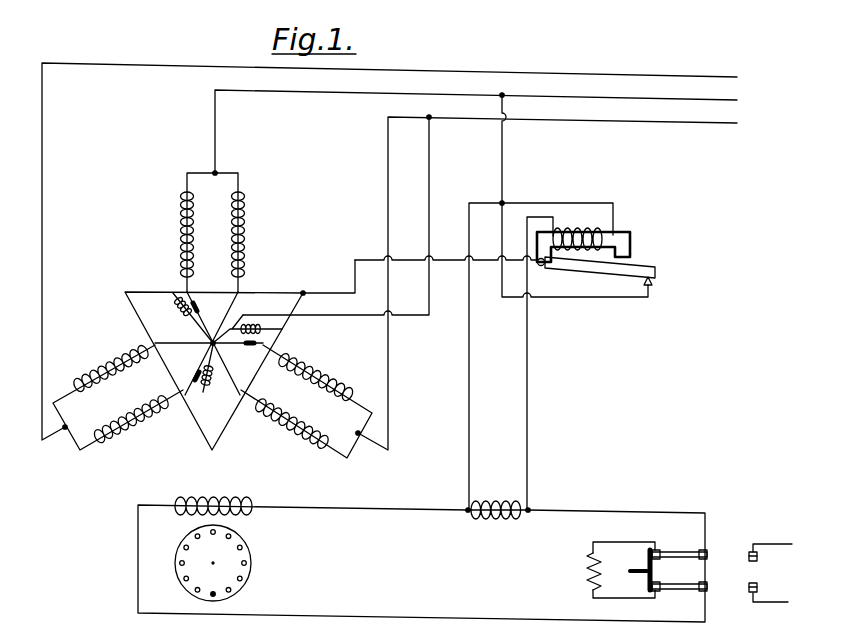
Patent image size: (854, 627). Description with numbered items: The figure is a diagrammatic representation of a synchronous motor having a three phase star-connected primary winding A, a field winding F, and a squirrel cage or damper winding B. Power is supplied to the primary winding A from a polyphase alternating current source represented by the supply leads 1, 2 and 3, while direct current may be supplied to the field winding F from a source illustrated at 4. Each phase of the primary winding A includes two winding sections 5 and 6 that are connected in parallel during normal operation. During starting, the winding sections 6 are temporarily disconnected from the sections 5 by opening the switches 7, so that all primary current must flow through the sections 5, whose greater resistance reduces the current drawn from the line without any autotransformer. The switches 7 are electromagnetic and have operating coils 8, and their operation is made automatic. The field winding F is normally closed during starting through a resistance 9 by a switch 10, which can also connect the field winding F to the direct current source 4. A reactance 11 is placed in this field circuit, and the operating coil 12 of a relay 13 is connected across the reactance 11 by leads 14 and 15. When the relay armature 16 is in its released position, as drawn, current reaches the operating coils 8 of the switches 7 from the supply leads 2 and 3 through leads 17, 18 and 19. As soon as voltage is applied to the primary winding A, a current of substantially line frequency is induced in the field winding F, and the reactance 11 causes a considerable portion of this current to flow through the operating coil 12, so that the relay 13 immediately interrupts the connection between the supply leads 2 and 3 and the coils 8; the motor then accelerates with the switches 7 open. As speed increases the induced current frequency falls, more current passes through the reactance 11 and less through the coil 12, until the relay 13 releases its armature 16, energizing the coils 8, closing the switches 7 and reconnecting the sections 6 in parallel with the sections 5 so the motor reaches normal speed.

The supply lead 1 is at (676, 78).
The supply lead 2 is at (683, 104).
The supply lead 3 is at (727, 118).
The source of direct current 4 is at (766, 526).
The winding section 5 is at (250, 197).
The winding section 6 is at (183, 197).
The switch 7 is at (201, 306).
The operating coil 8 is at (176, 309).
The resistance 9 is at (583, 570).
The switch 10 is at (676, 550).
The reactance 11 is at (505, 515).
The operating coil 12 is at (585, 232).
The relay 13 is at (622, 227).
The lead 14 is at (480, 355).
The lead 15 is at (540, 340).
The relay armature 16 is at (657, 270).
The lead 17 is at (433, 157).
The lead 18 is at (505, 163).
The lead 19 is at (441, 258).
The primary winding A is at (172, 242).
The squirrel cage or damper winding B is at (252, 563).
The field winding F is at (192, 497).